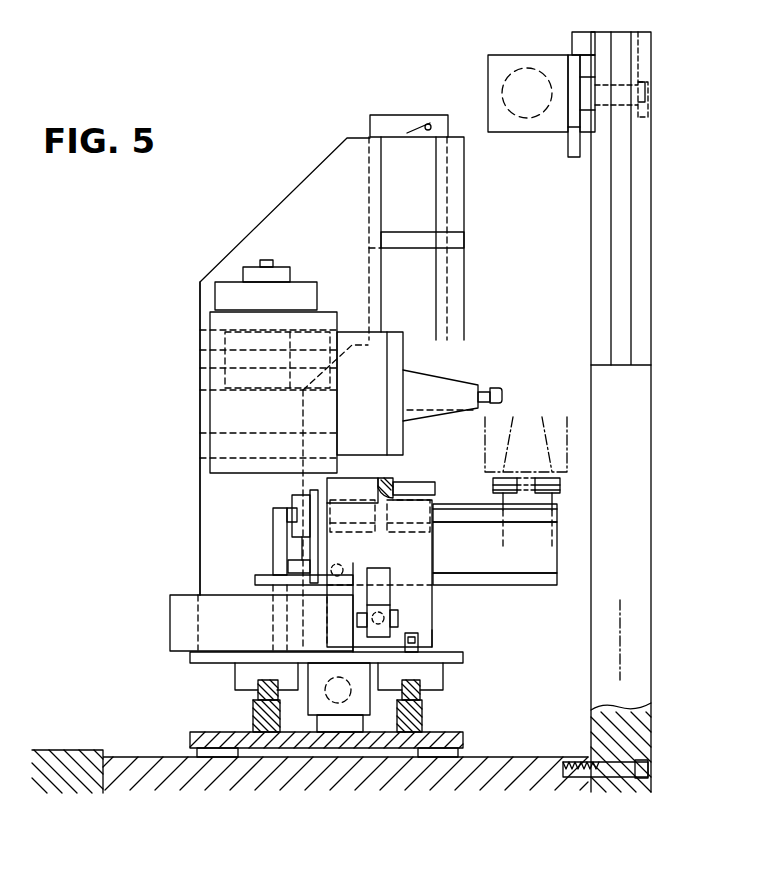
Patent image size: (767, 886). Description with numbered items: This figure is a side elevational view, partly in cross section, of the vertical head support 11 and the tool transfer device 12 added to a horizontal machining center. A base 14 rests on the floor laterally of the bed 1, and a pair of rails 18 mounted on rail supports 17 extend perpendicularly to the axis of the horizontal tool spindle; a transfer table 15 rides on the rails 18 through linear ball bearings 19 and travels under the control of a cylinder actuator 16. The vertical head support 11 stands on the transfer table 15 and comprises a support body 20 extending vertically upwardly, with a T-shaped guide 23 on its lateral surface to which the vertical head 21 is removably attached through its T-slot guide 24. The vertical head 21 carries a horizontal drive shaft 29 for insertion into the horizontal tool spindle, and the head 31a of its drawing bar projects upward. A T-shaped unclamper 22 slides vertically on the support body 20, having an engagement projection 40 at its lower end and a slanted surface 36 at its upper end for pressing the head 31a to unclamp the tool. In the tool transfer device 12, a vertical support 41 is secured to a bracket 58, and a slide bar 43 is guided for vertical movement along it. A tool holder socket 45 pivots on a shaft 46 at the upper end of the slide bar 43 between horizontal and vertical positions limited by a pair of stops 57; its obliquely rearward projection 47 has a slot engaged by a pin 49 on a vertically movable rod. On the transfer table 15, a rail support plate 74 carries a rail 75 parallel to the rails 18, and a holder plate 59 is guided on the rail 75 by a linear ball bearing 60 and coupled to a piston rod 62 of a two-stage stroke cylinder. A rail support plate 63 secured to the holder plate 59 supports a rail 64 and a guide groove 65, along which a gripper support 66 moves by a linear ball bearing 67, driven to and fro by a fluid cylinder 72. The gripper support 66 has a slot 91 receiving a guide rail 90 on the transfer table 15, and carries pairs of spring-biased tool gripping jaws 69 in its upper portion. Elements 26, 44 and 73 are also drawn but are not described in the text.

The bed 1 is at (67, 753).
The vertical head support 11 is at (257, 144).
The tool transfer device 12 is at (658, 140).
The base 14 is at (298, 743).
The transfer table 15 is at (463, 657).
The cylinder actuator 16 is at (352, 707).
The rail support 17 is at (413, 728).
The rail 18 is at (418, 693).
The linear ball bearing 19 is at (433, 678).
The support body 20 is at (240, 248).
The vertical head 21 is at (323, 315).
The unclamper 22 is at (395, 157).
The guide 23 is at (208, 340).
The T-slot guide 24 is at (323, 340).
The guide 26 is at (205, 445).
The drive shaft 29 is at (455, 383).
The head of drawing bar 31a is at (268, 263).
The slanted surface 36 is at (428, 127).
The engagement projection 40 is at (428, 240).
The vertical support 41 is at (633, 503).
The slide bar 43 is at (638, 272).
The guide rail 44 is at (622, 345).
The tool holder socket 45 is at (503, 125).
The shaft 46 is at (623, 95).
The projection 47 is at (568, 143).
The pin 49 is at (590, 137).
The stop 57 is at (578, 42).
The bracket 58 is at (538, 763).
The holder plate 59 is at (310, 487).
The linear ball bearing 60 is at (293, 500).
The piston rod 62 is at (347, 567).
The rail support plate 63 is at (548, 558).
The rail 64 is at (545, 515).
The guide groove 65 is at (540, 577).
The gripper support 66 is at (362, 487).
The linear ball bearing 67 is at (417, 543).
The tool gripping jaw 69 is at (420, 488).
The fluid cylinder 72 is at (182, 635).
The plate 73 is at (257, 580).
The rail support plate 74 is at (280, 547).
The rail 75 is at (287, 517).
The guide rail 90 is at (413, 645).
The slot 91 is at (397, 643).